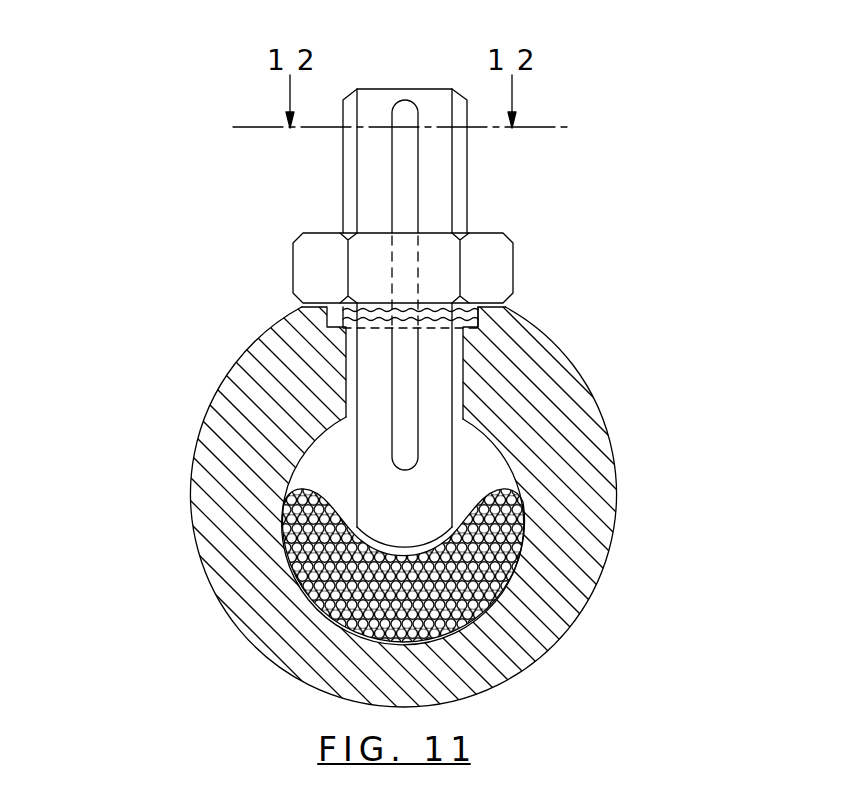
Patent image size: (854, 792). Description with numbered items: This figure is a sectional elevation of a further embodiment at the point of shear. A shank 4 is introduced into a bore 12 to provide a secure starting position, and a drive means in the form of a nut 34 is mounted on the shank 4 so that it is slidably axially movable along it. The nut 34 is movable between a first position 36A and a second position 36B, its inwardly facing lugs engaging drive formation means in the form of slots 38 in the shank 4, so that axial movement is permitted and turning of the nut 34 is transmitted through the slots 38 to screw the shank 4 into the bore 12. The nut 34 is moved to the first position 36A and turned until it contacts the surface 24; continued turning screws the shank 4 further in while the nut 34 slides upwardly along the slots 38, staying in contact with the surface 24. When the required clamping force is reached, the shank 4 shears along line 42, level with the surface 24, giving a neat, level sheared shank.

The shank 4 is at (437, 216).
The bore 12 is at (240, 354).
The surface 24 is at (296, 290).
The nut 34 is at (502, 275).
The slots 38 is at (405, 213).
The line of shear 42 is at (480, 322).
The first position 36A is at (402, 438).
The second position 36B is at (402, 115).